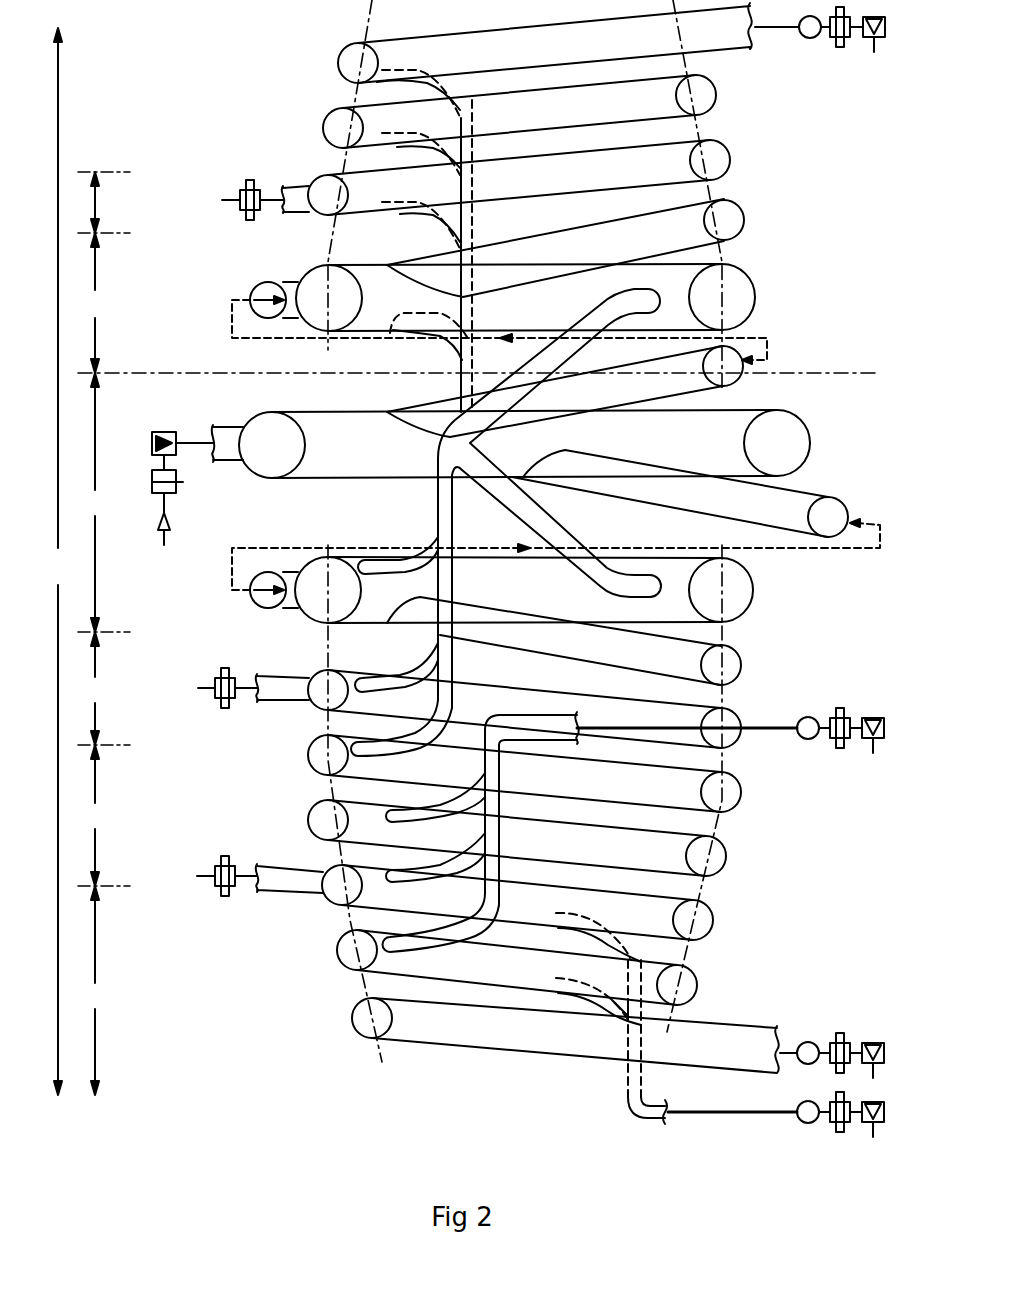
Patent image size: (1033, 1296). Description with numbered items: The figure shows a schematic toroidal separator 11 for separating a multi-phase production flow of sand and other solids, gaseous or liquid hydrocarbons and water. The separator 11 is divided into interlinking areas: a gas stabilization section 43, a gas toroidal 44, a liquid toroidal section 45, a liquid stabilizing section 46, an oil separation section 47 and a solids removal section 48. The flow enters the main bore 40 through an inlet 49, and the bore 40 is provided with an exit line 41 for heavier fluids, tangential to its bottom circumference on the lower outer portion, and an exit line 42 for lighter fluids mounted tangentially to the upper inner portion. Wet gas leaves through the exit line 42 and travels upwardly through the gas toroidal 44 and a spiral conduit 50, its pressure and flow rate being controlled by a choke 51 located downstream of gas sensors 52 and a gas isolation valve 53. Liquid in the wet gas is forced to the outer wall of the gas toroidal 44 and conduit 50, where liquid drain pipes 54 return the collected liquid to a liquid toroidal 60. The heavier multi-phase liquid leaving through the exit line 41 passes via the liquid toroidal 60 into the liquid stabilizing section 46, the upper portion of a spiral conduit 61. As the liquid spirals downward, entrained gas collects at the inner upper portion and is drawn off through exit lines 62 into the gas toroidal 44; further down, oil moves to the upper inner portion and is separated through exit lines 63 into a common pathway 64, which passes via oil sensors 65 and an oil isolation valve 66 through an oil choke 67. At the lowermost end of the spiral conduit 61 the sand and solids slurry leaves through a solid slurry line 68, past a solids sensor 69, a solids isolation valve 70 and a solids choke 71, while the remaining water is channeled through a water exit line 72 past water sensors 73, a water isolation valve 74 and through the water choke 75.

The toroidal separator 11 is at (55, 561).
The main bore 40 is at (810, 433).
The exit line for heavier fluids 41 is at (835, 498).
The exit line for lighter fluids 42 is at (740, 381).
The gas stabilization section 43 is at (193, 202).
The gas toroidal 44 is at (753, 282).
The liquid toroidal section 45 is at (104, 502).
The liquid stabilizing section 46 is at (409, 690).
The oil separation section 47 is at (395, 842).
The solids removal section 48 is at (94, 990).
The inlet 49 is at (227, 423).
The spiral conduit 50 is at (325, 123).
The choke 51 is at (877, 52).
The gas sensors 52 is at (806, 38).
The gas isolation valve 53 is at (842, 47).
The liquid drain pipes 54 is at (407, 218).
The liquid toroidal 60 is at (308, 557).
The spiral conduit 61 is at (307, 752).
The exit lines 62 is at (393, 550).
The exit lines 63 is at (397, 802).
The common pathway 64 is at (720, 762).
The oil sensors 65 is at (803, 717).
The oil isolation valve 66 is at (840, 707).
The oil choke 67 is at (870, 717).
The solid slurry line 68 is at (627, 1093).
The solids sensor 69 is at (800, 1105).
The solids isolation valve 70 is at (827, 1122).
The solids choke 71 is at (869, 1139).
The water exit line 72 is at (703, 1027).
The water sensors 73 is at (800, 1040).
The water isolation valve 74 is at (837, 1031).
The water choke 75 is at (870, 1037).